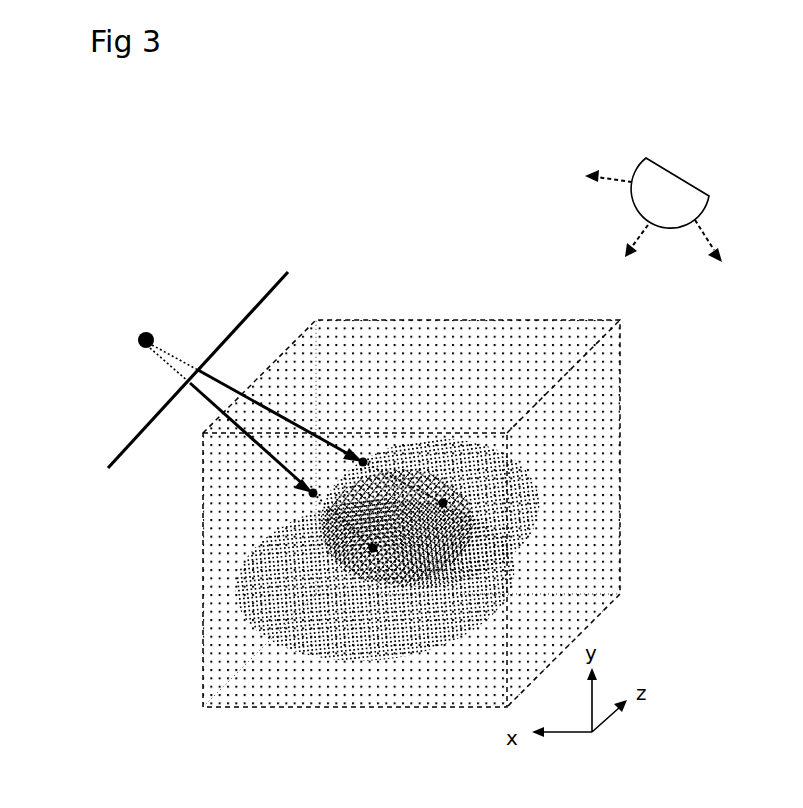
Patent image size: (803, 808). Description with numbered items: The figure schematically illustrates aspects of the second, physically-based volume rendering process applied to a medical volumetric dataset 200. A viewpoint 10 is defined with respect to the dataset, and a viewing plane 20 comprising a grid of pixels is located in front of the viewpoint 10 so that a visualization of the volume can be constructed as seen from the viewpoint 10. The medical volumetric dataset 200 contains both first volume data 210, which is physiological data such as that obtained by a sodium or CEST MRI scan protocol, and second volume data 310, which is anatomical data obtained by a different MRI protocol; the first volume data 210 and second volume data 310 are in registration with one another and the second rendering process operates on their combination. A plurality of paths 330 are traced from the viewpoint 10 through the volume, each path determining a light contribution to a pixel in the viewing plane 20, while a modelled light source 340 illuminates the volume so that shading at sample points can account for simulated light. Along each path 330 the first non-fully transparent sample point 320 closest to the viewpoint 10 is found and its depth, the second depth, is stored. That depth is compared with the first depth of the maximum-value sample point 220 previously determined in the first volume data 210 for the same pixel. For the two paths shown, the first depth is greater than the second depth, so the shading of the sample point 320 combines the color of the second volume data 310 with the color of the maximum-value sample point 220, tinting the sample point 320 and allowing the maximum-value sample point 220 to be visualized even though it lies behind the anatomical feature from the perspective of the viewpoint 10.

The viewpoint 10 is at (137, 340).
The viewing plane 20 is at (267, 293).
The medical volumetric dataset 200 is at (625, 372).
The first volume data 210 is at (483, 497).
The maximum-value sample point 220 is at (373, 548).
The second volume data 310 is at (410, 660).
The sample point 320 is at (363, 462).
The path 330 is at (275, 457).
The light source 340 is at (677, 172).